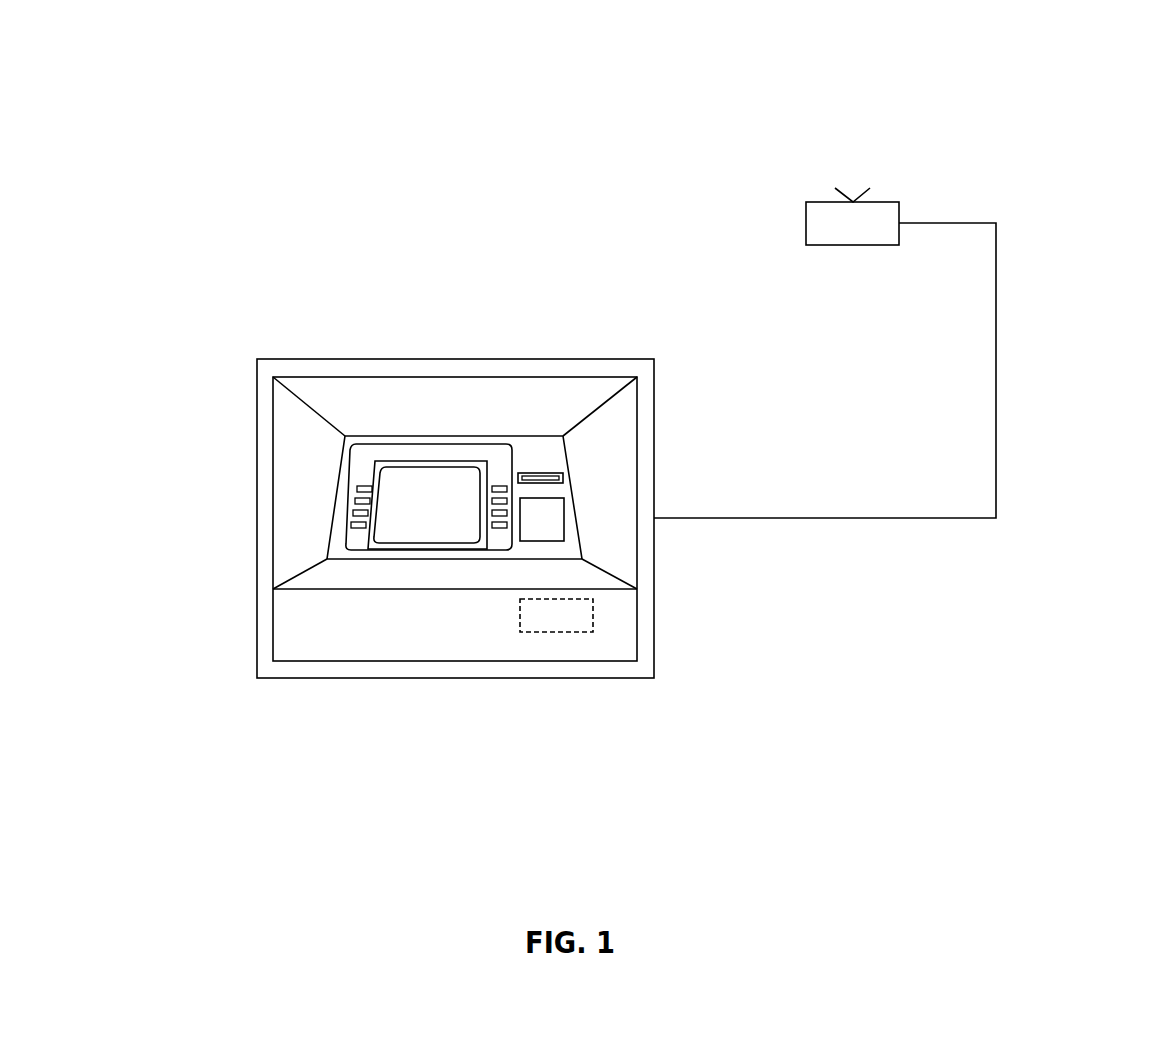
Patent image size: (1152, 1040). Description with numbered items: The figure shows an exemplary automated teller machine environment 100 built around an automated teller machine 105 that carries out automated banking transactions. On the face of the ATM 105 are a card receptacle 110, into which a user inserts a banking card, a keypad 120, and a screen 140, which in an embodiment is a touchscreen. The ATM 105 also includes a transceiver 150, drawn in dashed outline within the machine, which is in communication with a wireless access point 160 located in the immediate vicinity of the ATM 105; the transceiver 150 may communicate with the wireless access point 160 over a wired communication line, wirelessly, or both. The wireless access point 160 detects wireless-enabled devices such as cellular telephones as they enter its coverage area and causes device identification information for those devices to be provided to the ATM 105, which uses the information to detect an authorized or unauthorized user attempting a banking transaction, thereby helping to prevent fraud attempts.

The automated teller machine environment 100 is at (1136, 56).
The automated teller machine 105 is at (257, 426).
The card receptacle 110 is at (563, 478).
The keypad 120 is at (564, 513).
The screen 140 is at (393, 512).
The transceiver 150 is at (593, 612).
The wireless access point 160 is at (806, 226).